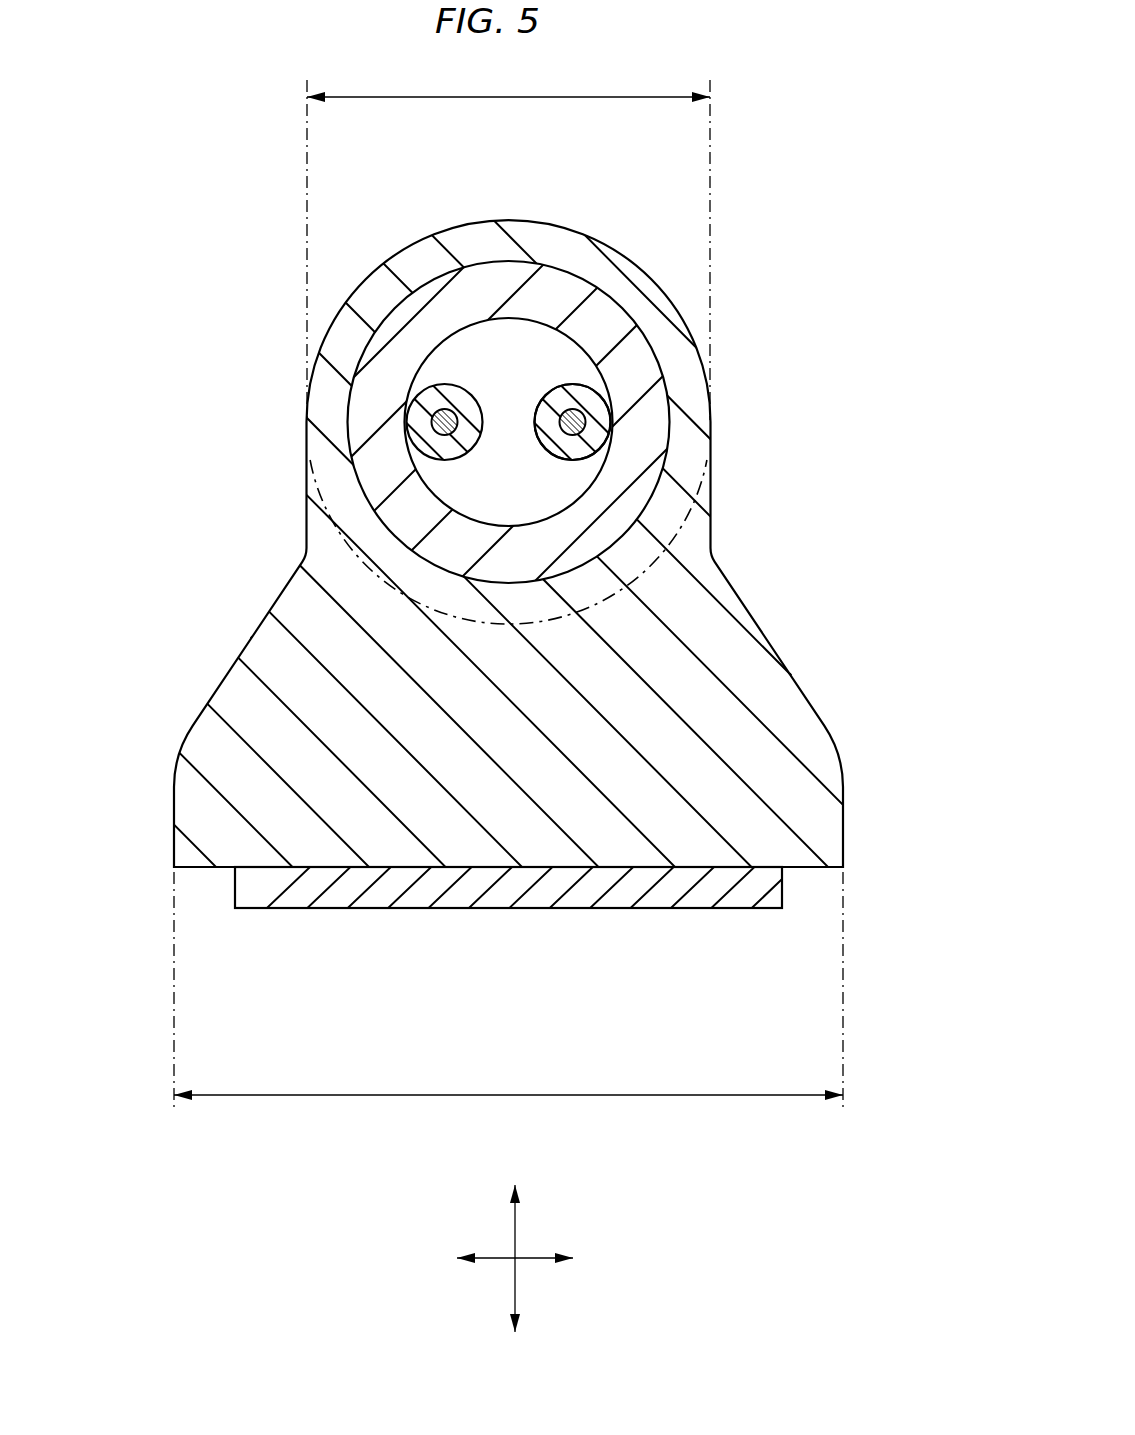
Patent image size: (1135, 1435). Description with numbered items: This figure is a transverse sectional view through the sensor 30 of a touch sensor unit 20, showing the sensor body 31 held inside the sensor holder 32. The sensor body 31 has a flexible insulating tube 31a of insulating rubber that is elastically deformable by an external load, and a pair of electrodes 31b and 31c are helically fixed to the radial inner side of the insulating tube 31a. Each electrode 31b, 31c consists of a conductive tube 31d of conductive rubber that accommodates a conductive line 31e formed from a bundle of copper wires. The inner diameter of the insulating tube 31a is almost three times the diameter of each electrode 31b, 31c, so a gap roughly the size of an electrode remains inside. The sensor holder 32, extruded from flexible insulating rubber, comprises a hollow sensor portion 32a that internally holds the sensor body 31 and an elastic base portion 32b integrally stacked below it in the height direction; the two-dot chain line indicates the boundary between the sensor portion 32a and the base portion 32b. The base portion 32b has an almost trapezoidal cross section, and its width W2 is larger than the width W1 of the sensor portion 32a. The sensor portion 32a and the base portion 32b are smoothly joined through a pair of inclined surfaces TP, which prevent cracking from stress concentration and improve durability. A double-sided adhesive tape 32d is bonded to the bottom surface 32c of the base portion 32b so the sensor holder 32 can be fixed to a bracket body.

The touch sensor unit 20 is at (192, 206).
The sensor 30 is at (276, 348).
The sensor body 31 is at (584, 270).
The insulating tube 31a is at (458, 302).
The electrode 31b is at (421, 458).
The electrode 31c is at (595, 386).
The conductive tube 31d is at (460, 403).
The conductive line 31e is at (436, 423).
The sensor holder 32 is at (772, 642).
The sensor portion 32a is at (537, 242).
The base portion 32b is at (545, 765).
The bottom surface 32c is at (815, 867).
The double-sided adhesive tape 32d is at (360, 885).
The inclined surface TP is at (252, 636).
The width of the sensor portion W1 is at (508, 240).
The width of the base portion W2 is at (508, 991).